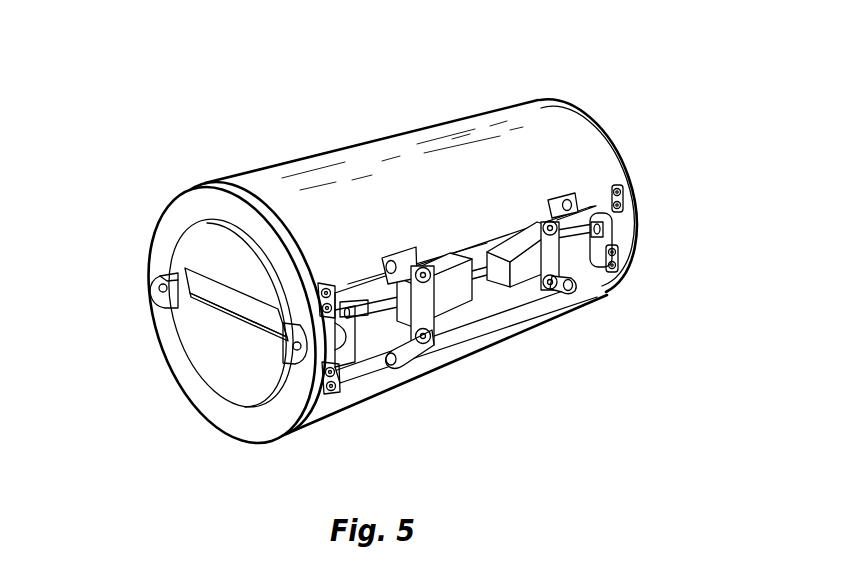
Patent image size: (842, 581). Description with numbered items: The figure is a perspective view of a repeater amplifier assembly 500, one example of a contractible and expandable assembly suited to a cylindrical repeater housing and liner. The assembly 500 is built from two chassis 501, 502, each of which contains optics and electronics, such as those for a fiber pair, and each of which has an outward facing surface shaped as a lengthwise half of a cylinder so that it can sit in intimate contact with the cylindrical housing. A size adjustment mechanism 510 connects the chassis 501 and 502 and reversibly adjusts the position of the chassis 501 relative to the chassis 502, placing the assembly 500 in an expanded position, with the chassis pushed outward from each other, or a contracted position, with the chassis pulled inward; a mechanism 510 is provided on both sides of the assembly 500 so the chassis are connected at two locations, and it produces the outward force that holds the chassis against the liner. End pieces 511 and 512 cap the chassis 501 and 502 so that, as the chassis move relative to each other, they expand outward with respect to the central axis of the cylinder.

The repeater amplifier assembly 500 is at (392, 33).
The chassis 501 is at (366, 141).
The chassis 502 is at (443, 367).
The size adjustment mechanism 510 is at (535, 208).
The end piece 511 is at (157, 219).
The end piece 512 is at (606, 131).